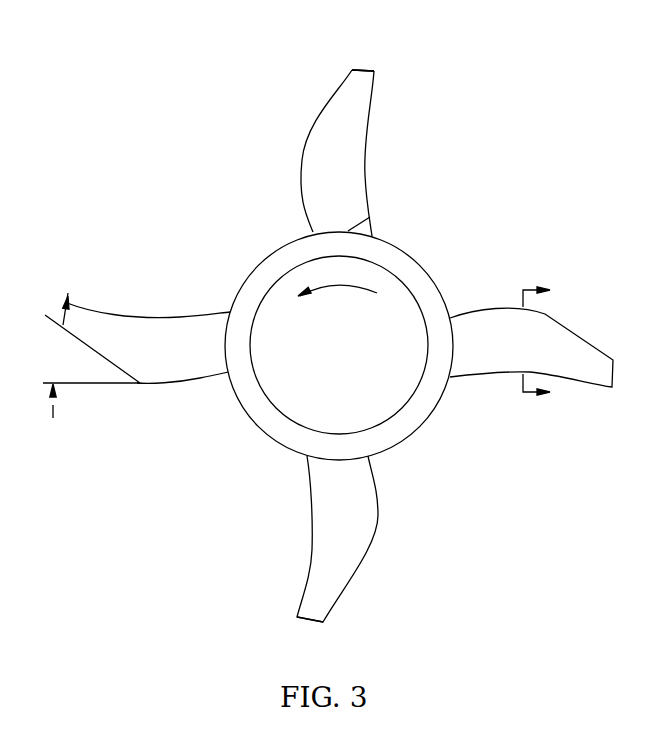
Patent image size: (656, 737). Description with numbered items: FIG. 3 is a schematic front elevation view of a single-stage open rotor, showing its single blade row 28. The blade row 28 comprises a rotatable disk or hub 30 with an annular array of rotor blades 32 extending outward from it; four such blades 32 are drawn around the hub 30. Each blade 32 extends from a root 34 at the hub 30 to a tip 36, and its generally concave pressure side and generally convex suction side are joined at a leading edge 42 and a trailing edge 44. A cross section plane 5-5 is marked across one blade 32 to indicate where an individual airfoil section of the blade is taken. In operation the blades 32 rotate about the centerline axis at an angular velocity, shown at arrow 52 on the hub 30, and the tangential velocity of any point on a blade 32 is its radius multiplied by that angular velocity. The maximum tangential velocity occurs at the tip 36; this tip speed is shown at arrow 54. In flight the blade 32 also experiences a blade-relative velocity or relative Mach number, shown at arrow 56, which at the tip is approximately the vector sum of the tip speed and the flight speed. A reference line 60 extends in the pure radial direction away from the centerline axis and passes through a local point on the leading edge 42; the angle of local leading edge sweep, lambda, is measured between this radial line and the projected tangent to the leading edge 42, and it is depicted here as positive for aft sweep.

The blade row 28 is at (402, 30).
The hub 30 is at (416, 272).
The rotor blade 32 is at (353, 339).
The root 34 is at (373, 219).
The tip 36 is at (372, 70).
The leading edge 42 is at (300, 172).
The trailing edge 44 is at (366, 170).
The angular velocity arrow 52 is at (351, 302).
The tip speed arrow 54 is at (370, 71).
The blade-relative velocity arrow 56 is at (417, 637).
The reference line 60 is at (100, 384).
The cross section plane 5- 5 is at (546, 341).